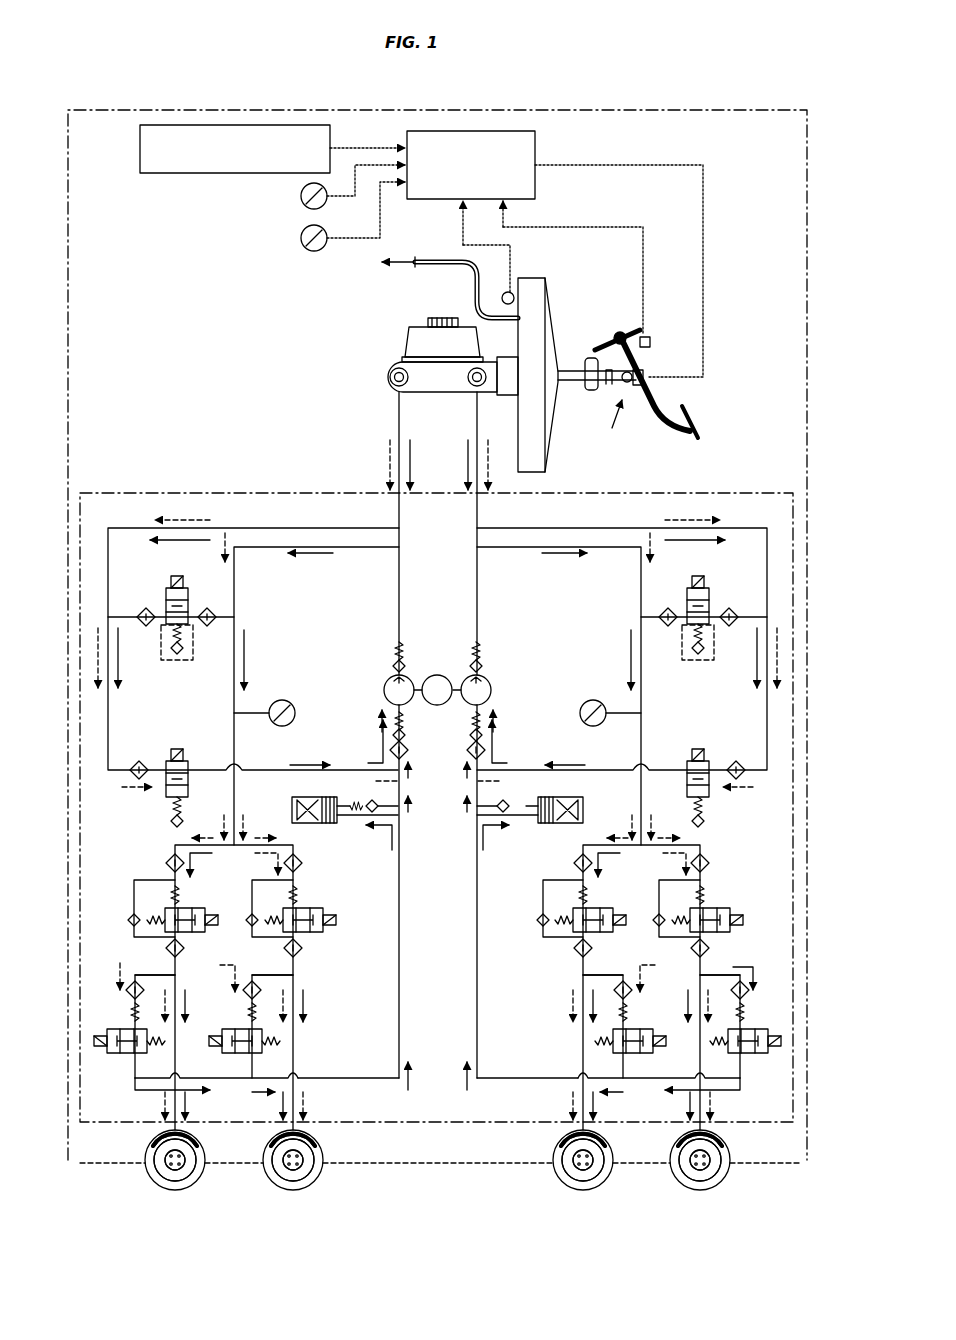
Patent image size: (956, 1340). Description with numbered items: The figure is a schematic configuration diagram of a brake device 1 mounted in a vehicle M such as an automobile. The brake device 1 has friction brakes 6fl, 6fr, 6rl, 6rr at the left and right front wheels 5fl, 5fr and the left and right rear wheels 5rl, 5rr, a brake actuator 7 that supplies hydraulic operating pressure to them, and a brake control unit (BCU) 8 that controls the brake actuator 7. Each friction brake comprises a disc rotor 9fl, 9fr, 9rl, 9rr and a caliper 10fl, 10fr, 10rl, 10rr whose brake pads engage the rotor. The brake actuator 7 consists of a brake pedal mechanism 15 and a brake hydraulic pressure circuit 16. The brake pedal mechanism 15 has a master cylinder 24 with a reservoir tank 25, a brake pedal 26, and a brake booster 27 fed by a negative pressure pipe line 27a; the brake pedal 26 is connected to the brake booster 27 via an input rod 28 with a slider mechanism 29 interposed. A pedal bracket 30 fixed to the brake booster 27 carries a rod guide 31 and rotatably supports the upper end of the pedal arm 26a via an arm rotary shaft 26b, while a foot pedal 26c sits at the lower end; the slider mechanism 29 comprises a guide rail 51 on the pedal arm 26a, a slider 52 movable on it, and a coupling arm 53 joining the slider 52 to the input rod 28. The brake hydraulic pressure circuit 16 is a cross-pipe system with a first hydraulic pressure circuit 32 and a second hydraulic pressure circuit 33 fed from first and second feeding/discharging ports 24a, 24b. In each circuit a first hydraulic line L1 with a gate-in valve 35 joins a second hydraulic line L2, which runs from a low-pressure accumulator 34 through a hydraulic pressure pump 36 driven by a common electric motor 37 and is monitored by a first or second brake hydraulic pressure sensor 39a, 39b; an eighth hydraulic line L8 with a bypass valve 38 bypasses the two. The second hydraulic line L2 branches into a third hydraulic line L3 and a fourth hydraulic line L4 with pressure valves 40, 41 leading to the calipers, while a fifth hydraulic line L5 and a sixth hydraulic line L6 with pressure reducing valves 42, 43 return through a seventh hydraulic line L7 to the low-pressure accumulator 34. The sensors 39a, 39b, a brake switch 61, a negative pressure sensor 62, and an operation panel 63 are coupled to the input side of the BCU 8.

The brake device 1 is at (722, 184).
The vehicle M is at (588, 110).
The right rear wheel 5rr is at (198, 1176).
The left front wheel 5fl is at (314, 1176).
The right front wheel 5fr is at (604, 1176).
The left rear wheel 5rl is at (721, 1176).
The friction brake 6rr is at (152, 1144).
The friction brake 6fl is at (322, 1156).
The friction brake 6fr is at (560, 1144).
The friction brake 6rl is at (729, 1156).
The disc rotor 9rr is at (154, 1158).
The disc rotor 9fl is at (272, 1158).
The disc rotor 9fr is at (562, 1158).
The disc rotor 9rl is at (680, 1158).
The caliper 10rr is at (188, 1150).
The caliper 10fl is at (304, 1150).
The caliper 10fr is at (596, 1150).
The caliper 10rl is at (712, 1150).
The brake actuator 7 is at (283, 398).
The brake control unit (BCU) 8 is at (537, 148).
The brake pedal mechanism 15 is at (378, 338).
The brake hydraulic pressure circuit 16 is at (748, 490).
The master cylinder 24 is at (407, 390).
The first feeding/discharging port 24a is at (389, 378).
The second feeding/discharging port 24b is at (470, 386).
The reservoir tank 25 is at (414, 326).
The brake pedal 26 is at (670, 388).
The pedal arm 26a is at (640, 372).
The arm rotary shaft 26b is at (618, 332).
The foot pedal 26c is at (694, 418).
The brake booster 27 is at (532, 278).
The negative pressure pipe line 27a is at (458, 283).
The input rod 28 is at (572, 392).
The slider mechanism 29 is at (608, 427).
The pedal bracket 30 is at (600, 345).
The rod guide 31 is at (588, 358).
The first hydraulic pressure circuit 32 is at (249, 524).
The second hydraulic pressure circuit 33 is at (626, 524).
The low-pressure accumulator 34 is at (326, 824).
The gate-in valve 35 is at (190, 768).
The hydraulic pressure pump 36 is at (383, 690).
The electric motor 37 is at (437, 674).
The bypass valve 38 is at (190, 600).
The first brake hydraulic pressure sensor 39a is at (301, 196).
The second brake hydraulic pressure sensor 39b is at (301, 238).
The pressure valve 40 is at (311, 906).
The pressure valve 41 is at (193, 906).
The pressure reducing valve 42 is at (232, 1032).
The pressure reducing valve 43 is at (118, 1028).
The guide rail 51 is at (646, 380).
The slider 52 is at (627, 384).
The coupling arm 53 is at (607, 388).
The brake switch 61 is at (648, 338).
The negative pressure sensor 62 is at (504, 294).
The operation panel 63 is at (140, 150).
The first hydraulic line L1 is at (286, 528).
The second hydraulic line L2 is at (392, 570).
The third hydraulic line L3 is at (296, 1070).
The fourth hydraulic line L4 is at (182, 1076).
The fifth hydraulic line L5 is at (280, 966).
The sixth hydraulic line L6 is at (150, 966).
The seventh hydraulic line L7 is at (396, 966).
The eighth hydraulic line L8 is at (146, 608).